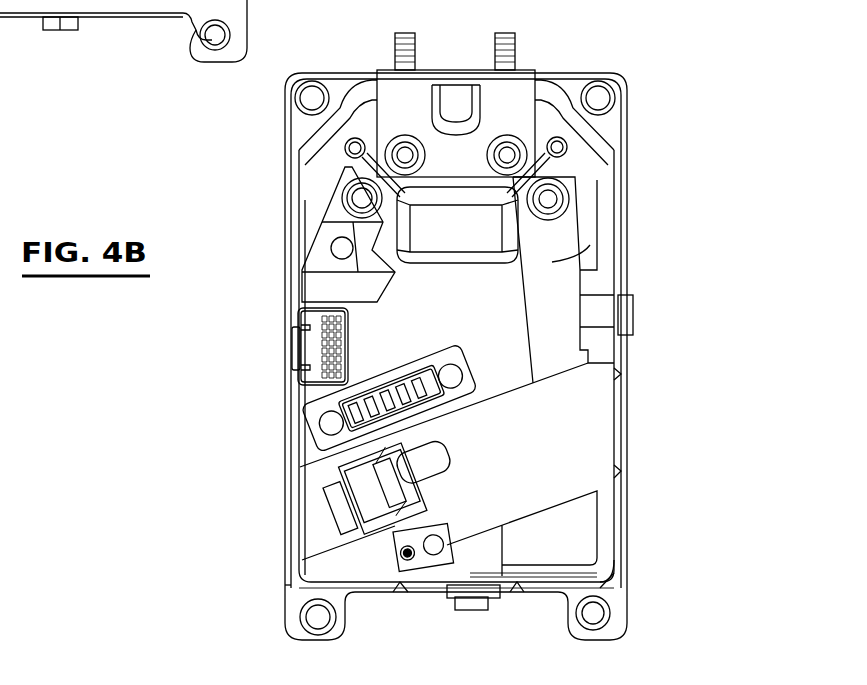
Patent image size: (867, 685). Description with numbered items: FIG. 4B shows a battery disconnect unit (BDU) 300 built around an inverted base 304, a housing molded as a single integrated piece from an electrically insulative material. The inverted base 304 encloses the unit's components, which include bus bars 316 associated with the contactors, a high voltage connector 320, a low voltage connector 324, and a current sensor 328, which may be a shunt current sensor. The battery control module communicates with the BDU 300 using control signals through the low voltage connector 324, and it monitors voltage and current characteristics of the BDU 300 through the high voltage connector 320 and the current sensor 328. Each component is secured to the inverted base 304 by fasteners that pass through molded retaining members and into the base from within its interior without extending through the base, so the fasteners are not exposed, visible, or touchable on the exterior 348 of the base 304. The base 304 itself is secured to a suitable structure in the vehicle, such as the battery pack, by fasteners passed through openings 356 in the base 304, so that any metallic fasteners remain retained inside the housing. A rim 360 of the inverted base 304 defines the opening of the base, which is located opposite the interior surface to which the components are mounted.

The battery disconnect unit 300 is at (620, 68).
The inverted base 304 is at (298, 597).
The bus bars 316 is at (472, 95).
The high voltage connector 320 is at (348, 426).
The low voltage connector 324 is at (312, 348).
The current sensor 328 is at (340, 506).
The exterior 348 is at (578, 437).
The openings 356 is at (198, 36).
The rim 360 is at (632, 518).